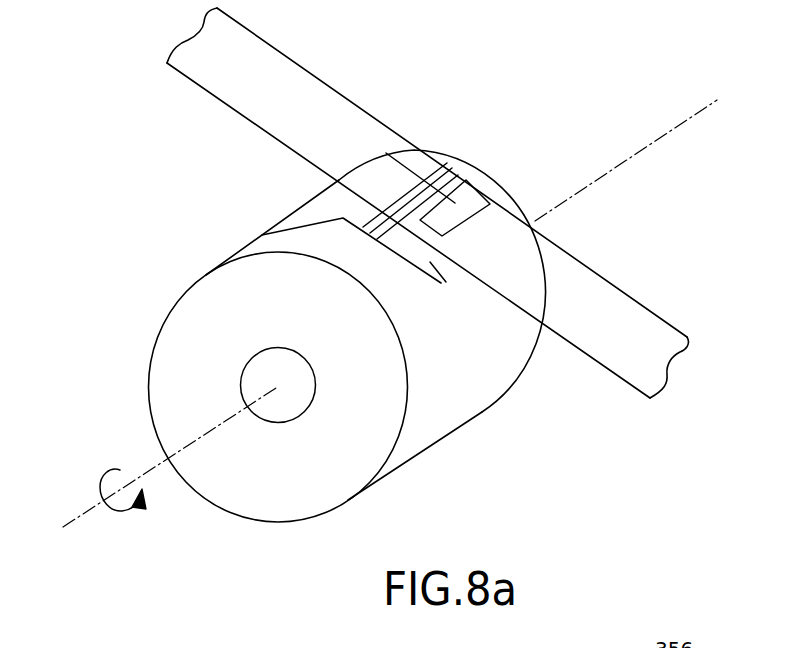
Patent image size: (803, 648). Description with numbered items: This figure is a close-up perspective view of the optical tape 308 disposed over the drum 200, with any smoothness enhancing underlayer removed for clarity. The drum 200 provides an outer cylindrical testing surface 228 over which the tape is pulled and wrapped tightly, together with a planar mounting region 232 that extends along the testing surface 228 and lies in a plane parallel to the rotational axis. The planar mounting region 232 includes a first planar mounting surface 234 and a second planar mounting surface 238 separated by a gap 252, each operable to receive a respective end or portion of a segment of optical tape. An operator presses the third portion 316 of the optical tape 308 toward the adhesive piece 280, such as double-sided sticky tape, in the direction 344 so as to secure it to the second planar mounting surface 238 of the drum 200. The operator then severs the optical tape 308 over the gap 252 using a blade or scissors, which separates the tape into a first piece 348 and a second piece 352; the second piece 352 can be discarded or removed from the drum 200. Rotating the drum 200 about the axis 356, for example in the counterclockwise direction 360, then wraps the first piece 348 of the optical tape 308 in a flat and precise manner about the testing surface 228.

The drum 200 is at (155, 290).
The testing surface 228 is at (457, 420).
The planar mounting region 232 is at (508, 200).
The first planar mounting surface 234 is at (342, 202).
The second planar mounting surface 238 is at (446, 284).
The gap 252 is at (417, 200).
The second piece of adhesive 280 is at (480, 212).
The optical tape 308 is at (650, 303).
The third portion 316 is at (505, 211).
The direction 344 is at (463, 190).
The first piece 348 is at (618, 355).
The second piece 352 is at (315, 78).
The axis 356 is at (675, 129).
The counterclockwise direction 360 is at (102, 486).